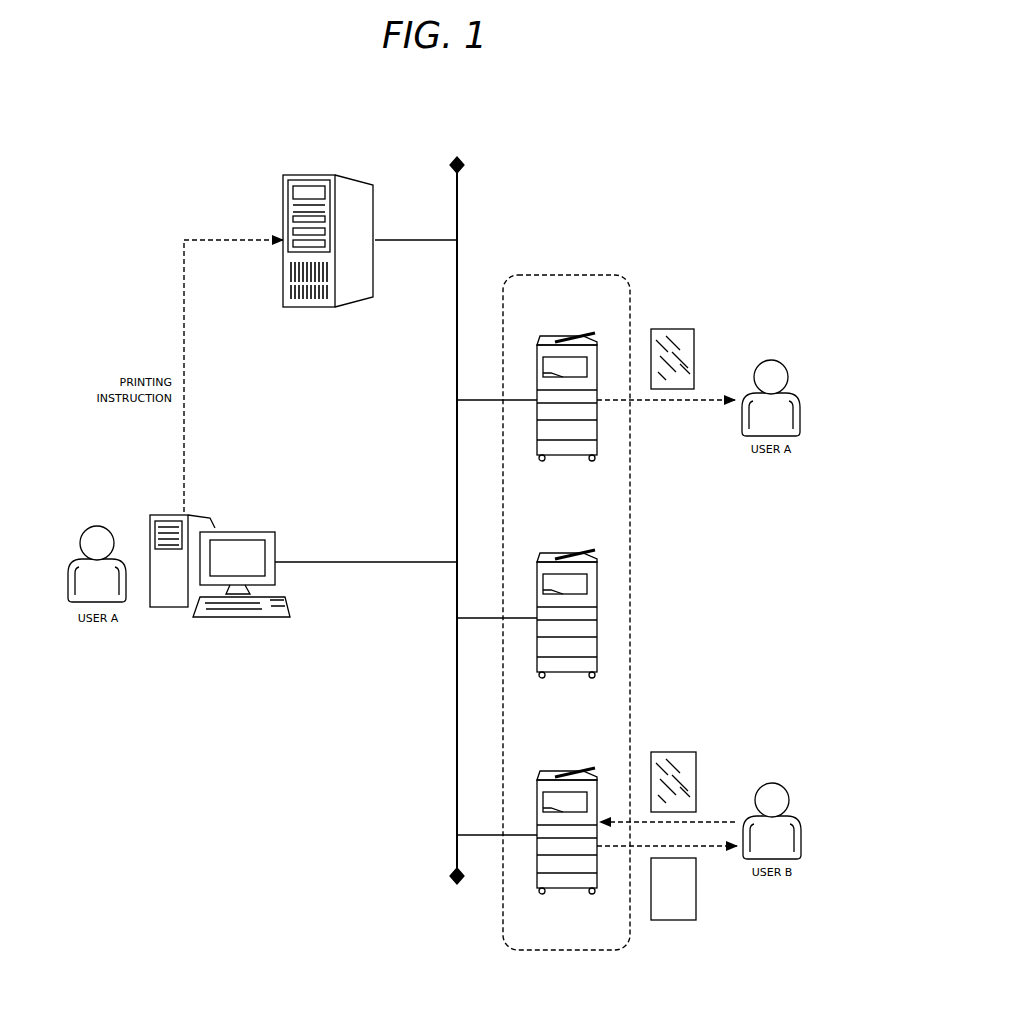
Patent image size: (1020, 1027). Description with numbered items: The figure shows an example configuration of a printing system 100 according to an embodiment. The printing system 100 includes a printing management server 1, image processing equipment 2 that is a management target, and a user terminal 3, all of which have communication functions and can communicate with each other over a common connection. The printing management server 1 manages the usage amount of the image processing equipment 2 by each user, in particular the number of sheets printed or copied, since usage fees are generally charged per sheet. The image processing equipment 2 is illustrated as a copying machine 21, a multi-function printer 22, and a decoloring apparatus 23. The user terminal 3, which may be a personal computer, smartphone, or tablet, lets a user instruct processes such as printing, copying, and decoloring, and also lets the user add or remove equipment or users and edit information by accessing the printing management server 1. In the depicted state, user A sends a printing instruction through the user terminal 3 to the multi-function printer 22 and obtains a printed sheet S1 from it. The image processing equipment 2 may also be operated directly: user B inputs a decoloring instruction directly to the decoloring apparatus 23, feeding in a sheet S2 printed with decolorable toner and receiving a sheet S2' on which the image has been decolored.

The printing system 100 is at (682, 138).
The printing management server 1 is at (320, 307).
The user terminal 3 is at (240, 530).
The image processing equipment 2 is at (568, 950).
The multi-function printer 22 is at (565, 336).
The copying machine 21 is at (565, 553).
The decoloring apparatus 23 is at (565, 770).
The printed sheet S1 is at (672, 328).
The sheet S2 is at (673, 761).
The sheet after the decoloring process S2' is at (673, 912).